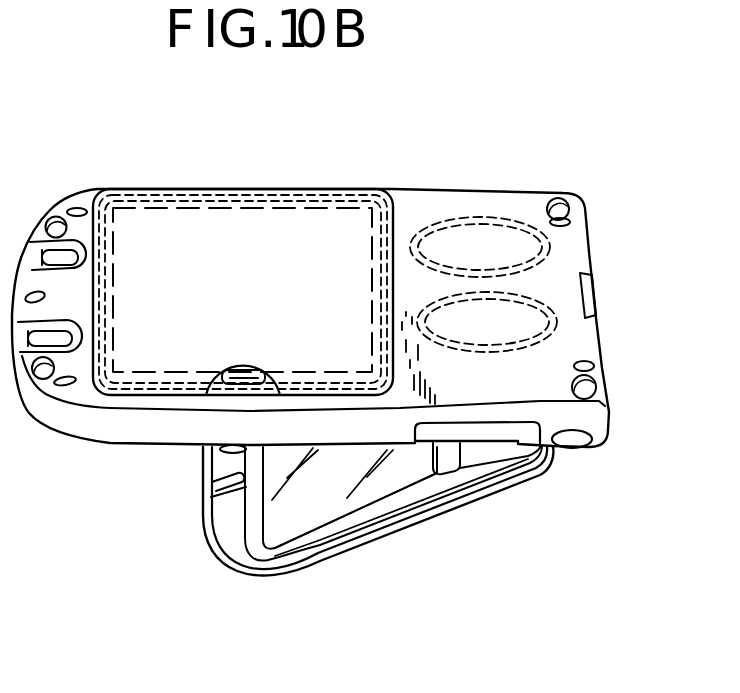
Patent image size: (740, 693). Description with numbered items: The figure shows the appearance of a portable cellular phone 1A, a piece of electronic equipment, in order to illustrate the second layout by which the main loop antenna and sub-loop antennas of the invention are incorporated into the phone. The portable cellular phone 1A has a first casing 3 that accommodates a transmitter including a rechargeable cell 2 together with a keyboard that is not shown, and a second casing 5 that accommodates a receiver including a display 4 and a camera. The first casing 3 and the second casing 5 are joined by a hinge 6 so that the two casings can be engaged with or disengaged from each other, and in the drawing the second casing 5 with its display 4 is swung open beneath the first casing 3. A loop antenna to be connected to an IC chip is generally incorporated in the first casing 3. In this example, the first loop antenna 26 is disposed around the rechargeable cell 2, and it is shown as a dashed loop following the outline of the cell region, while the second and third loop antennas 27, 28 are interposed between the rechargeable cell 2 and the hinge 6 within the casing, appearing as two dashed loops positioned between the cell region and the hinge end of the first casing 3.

The portable cellular phone 1A is at (600, 178).
The rechargeable cell 2 is at (294, 263).
The first casing 3 is at (428, 190).
The display 4 is at (315, 503).
The second casing 5 is at (470, 506).
The hinge 6 is at (574, 441).
The first loop antenna 26 is at (188, 190).
The second loop antenna 27 is at (485, 206).
The third loop antenna 28 is at (552, 333).